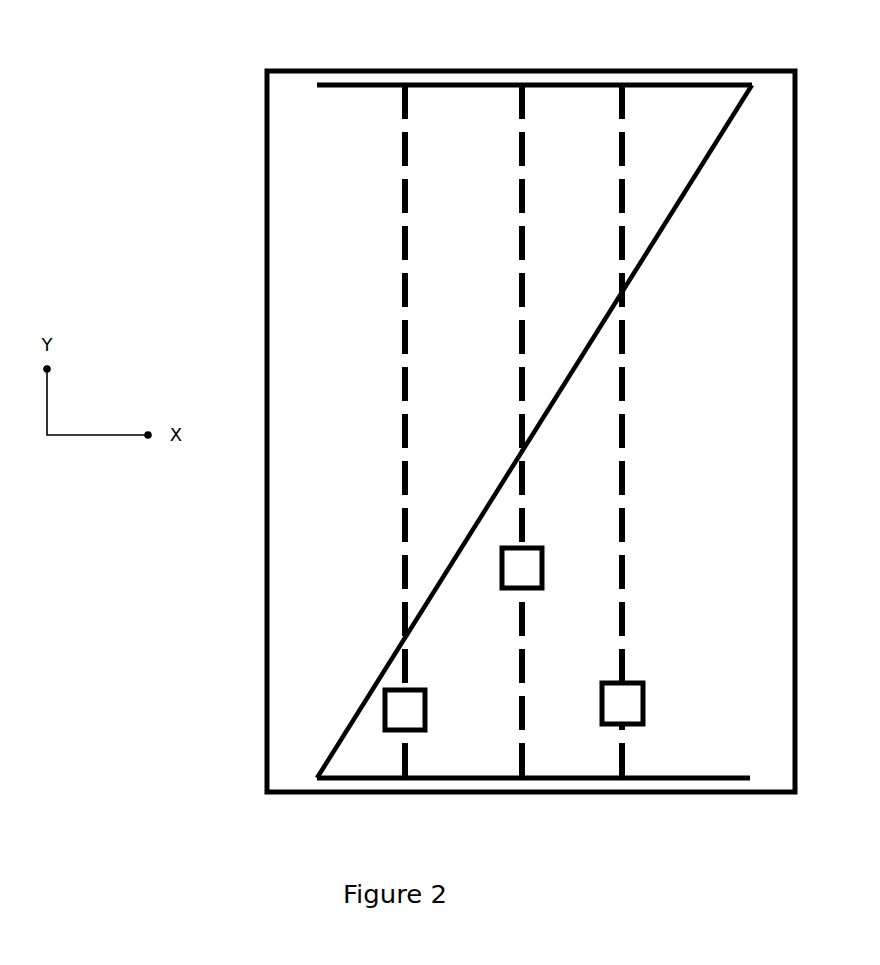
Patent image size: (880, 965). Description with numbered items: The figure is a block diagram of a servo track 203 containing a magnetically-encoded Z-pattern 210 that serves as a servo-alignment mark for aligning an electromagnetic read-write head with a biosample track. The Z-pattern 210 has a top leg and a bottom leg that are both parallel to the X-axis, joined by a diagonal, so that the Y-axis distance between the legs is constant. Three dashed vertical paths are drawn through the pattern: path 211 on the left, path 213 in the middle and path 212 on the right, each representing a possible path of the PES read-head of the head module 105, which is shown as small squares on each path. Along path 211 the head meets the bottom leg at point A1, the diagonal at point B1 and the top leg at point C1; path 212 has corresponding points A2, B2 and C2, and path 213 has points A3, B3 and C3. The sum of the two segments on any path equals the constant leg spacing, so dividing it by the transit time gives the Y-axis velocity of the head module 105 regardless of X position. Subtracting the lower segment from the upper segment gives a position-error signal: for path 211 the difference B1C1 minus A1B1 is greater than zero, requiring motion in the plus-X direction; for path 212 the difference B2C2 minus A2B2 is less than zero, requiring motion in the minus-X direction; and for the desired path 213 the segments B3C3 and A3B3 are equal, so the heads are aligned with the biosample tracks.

The servo track 203 is at (431, 66).
The Z-pattern 210 is at (713, 147).
The path 211 is at (404, 243).
The path 212 is at (626, 527).
The path 213 is at (519, 256).
The head module 105 is at (404, 708).
The point C1 is at (401, 91).
The point C2 is at (626, 91).
The point C3 is at (526, 91).
The point B1 is at (401, 633).
The point B2 is at (626, 296).
The point B3 is at (526, 454).
The point A1 is at (410, 774).
The point A2 is at (628, 772).
The point A3 is at (527, 772).